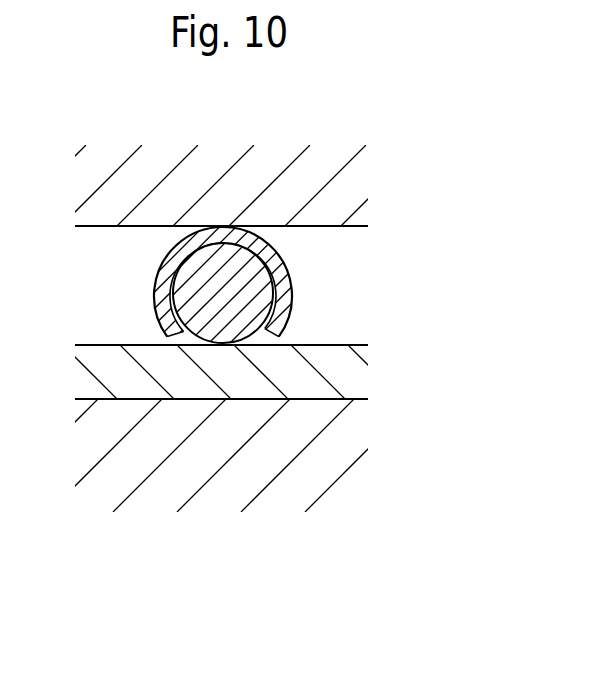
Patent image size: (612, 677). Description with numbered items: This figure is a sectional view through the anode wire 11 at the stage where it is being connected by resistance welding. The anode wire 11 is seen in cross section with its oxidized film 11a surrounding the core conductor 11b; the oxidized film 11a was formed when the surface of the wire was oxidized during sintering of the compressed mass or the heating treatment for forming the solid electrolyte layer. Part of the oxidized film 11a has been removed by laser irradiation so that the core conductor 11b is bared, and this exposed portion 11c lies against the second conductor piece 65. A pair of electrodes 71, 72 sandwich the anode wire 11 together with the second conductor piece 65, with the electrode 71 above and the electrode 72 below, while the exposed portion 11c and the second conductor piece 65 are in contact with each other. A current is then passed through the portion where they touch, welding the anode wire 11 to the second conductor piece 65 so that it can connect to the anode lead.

The anode wire 11 is at (156, 265).
The oxidized film 11a is at (278, 284).
The core conductor 11b is at (225, 330).
The exposed portion 11c is at (257, 328).
The second conductor piece 65 is at (328, 362).
The electrode 71 is at (330, 215).
The electrode 72 is at (110, 420).